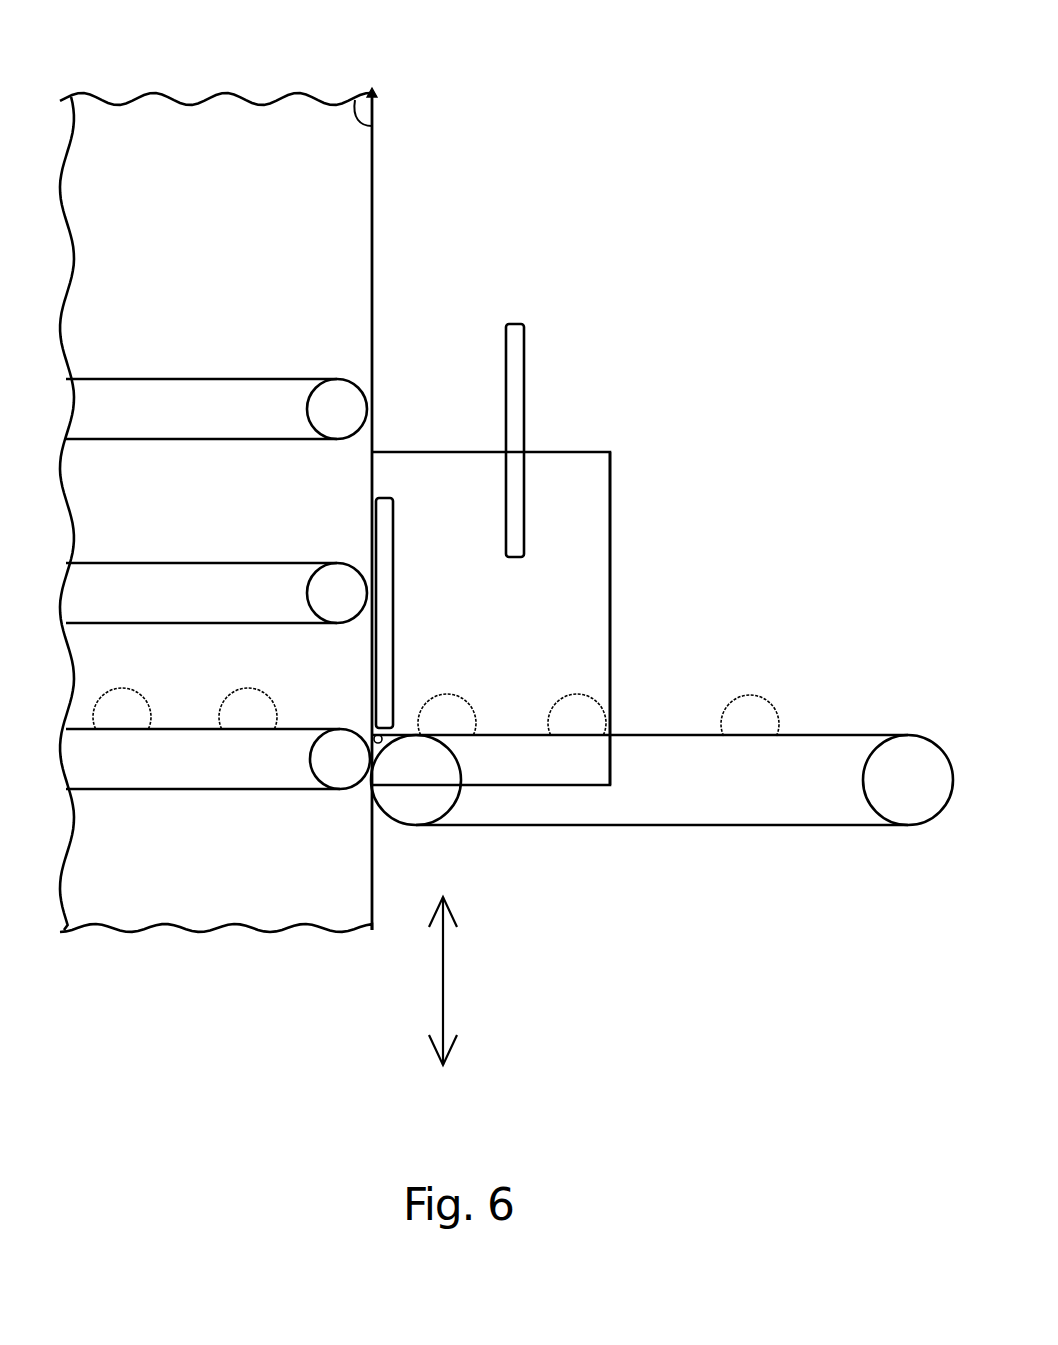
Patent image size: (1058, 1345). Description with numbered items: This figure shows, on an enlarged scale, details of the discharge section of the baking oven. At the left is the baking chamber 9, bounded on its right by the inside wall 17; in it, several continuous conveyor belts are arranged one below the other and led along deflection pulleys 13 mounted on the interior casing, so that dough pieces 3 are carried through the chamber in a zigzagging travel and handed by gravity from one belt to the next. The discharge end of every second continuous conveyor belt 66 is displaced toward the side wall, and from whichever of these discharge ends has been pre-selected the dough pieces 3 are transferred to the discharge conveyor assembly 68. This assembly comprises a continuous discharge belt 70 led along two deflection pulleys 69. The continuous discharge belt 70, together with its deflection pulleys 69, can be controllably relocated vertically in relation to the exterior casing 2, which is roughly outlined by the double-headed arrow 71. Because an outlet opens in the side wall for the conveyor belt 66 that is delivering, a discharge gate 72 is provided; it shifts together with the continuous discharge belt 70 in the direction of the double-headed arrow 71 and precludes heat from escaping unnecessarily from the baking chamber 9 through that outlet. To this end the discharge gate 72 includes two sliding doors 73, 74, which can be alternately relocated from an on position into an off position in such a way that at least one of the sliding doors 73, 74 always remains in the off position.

The exterior casing 2 is at (374, 168).
The dough pieces 3 is at (752, 710).
The baking chamber 9 is at (216, 878).
The deflection pulleys 13 is at (340, 405).
The inside wall 17 is at (355, 100).
The continuous conveyor belt 66 is at (258, 379).
The discharge conveyor assembly 68 is at (600, 543).
The deflection pulleys 69 is at (423, 805).
The continuous discharge belt 70 is at (826, 735).
The double-headed arrow 71 is at (443, 987).
The discharge gate 72 is at (572, 453).
The sliding door 73 is at (385, 600).
The sliding door 74 is at (516, 330).